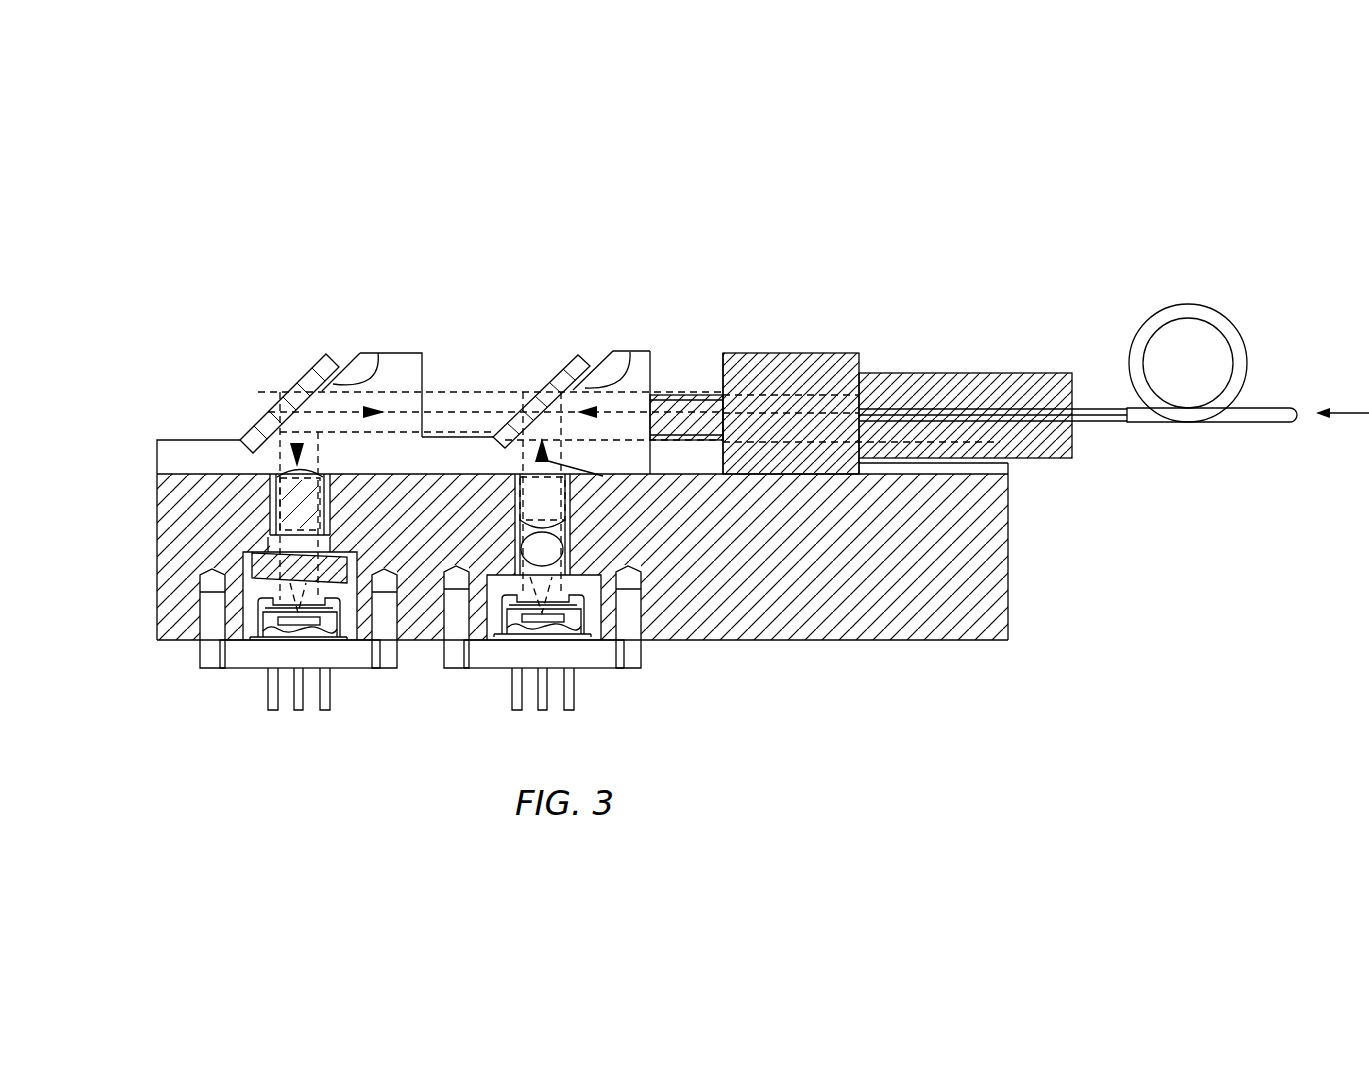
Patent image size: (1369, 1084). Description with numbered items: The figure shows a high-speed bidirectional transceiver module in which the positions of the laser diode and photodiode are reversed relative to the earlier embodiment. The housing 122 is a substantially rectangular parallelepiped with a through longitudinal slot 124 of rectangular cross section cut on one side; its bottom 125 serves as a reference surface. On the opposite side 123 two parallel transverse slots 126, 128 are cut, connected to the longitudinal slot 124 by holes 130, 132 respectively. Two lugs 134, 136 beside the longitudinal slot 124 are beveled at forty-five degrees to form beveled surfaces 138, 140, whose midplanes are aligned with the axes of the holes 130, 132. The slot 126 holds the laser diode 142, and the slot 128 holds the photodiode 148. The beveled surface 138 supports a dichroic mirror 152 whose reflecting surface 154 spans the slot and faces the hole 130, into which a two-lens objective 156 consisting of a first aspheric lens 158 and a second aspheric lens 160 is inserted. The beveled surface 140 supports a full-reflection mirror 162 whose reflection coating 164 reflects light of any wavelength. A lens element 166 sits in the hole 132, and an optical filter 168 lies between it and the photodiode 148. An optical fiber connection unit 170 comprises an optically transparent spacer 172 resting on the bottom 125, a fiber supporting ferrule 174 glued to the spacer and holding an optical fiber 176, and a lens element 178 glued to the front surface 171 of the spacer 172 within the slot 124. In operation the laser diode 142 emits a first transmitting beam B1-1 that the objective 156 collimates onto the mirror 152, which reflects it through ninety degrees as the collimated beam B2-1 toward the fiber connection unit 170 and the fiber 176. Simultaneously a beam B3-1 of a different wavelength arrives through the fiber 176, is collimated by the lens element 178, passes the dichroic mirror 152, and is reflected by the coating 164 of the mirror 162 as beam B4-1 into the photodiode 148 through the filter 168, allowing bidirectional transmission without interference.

The housing 122 is at (157, 500).
The side of the housing opposite to the slot 123 is at (963, 640).
The longitudinal slot 124 is at (452, 372).
The bottom of the slot 125 is at (977, 465).
The transverse slot 126 is at (493, 615).
The transverse slot 128 is at (352, 620).
The hole 130 is at (603, 476).
The hole 132 is at (270, 488).
The lug 134 is at (377, 358).
The lug 136 is at (617, 351).
The beveled surface 138 is at (625, 355).
The beveled surface 140 is at (349, 362).
The laser diode 142 is at (587, 612).
The photodiode 148 is at (257, 622).
The dichroic mirror 152 is at (564, 346).
The reflecting surface 154 is at (652, 362).
The two-lens objective 156 is at (572, 507).
The first aspheric lens 158 is at (505, 535).
The second aspheric lens 160 is at (513, 487).
The full-reflection mirror 162 is at (271, 386).
The reflection coating 164 is at (395, 358).
The lens element 166 is at (267, 477).
The optical filter 168 is at (255, 567).
The optical fiber connection unit 170 is at (1027, 228).
The front surface of the spacer 171 is at (725, 366).
The optically transparent spacer 172 is at (797, 353).
The fiber supporting ferrule 174 is at (905, 373).
The optical fiber 176 is at (1148, 422).
The lens element 178 is at (708, 395).
The first transmitting laser beam B1-1 is at (572, 527).
The beam B2-1 is at (588, 414).
The beam B3-1 is at (1342, 396).
The beam B4-1 is at (303, 445).